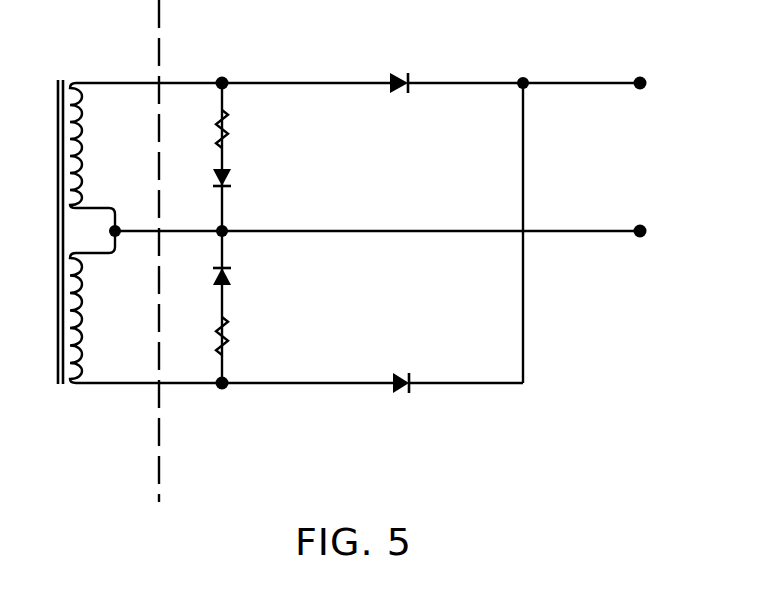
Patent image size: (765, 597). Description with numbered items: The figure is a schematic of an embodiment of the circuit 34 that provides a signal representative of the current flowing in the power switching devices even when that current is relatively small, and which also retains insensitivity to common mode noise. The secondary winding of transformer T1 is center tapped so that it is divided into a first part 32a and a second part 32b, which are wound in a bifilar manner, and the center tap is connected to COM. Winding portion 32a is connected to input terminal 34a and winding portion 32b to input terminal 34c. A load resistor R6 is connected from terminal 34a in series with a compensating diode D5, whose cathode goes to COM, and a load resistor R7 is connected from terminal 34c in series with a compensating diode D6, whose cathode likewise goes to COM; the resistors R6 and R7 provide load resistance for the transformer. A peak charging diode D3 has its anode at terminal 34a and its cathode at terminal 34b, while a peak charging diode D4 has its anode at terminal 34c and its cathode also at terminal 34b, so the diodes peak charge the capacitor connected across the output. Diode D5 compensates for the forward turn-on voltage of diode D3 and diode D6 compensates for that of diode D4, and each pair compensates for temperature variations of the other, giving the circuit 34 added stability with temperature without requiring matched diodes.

The transformer T1 is at (57, 215).
The first part of secondary winding 32a is at (78, 123).
The second part of secondary winding 32b is at (78, 293).
The circuit 34 is at (333, 32).
The input terminal 34a is at (217, 72).
The terminal 34b is at (668, 85).
The input terminal 34c is at (217, 398).
The common COM is at (673, 234).
The diode D3 is at (396, 67).
The diode D4 is at (399, 402).
The compensating diode D5 is at (245, 179).
The compensating diode D6 is at (245, 279).
The resistor R6 is at (244, 129).
The resistor R7 is at (243, 336).